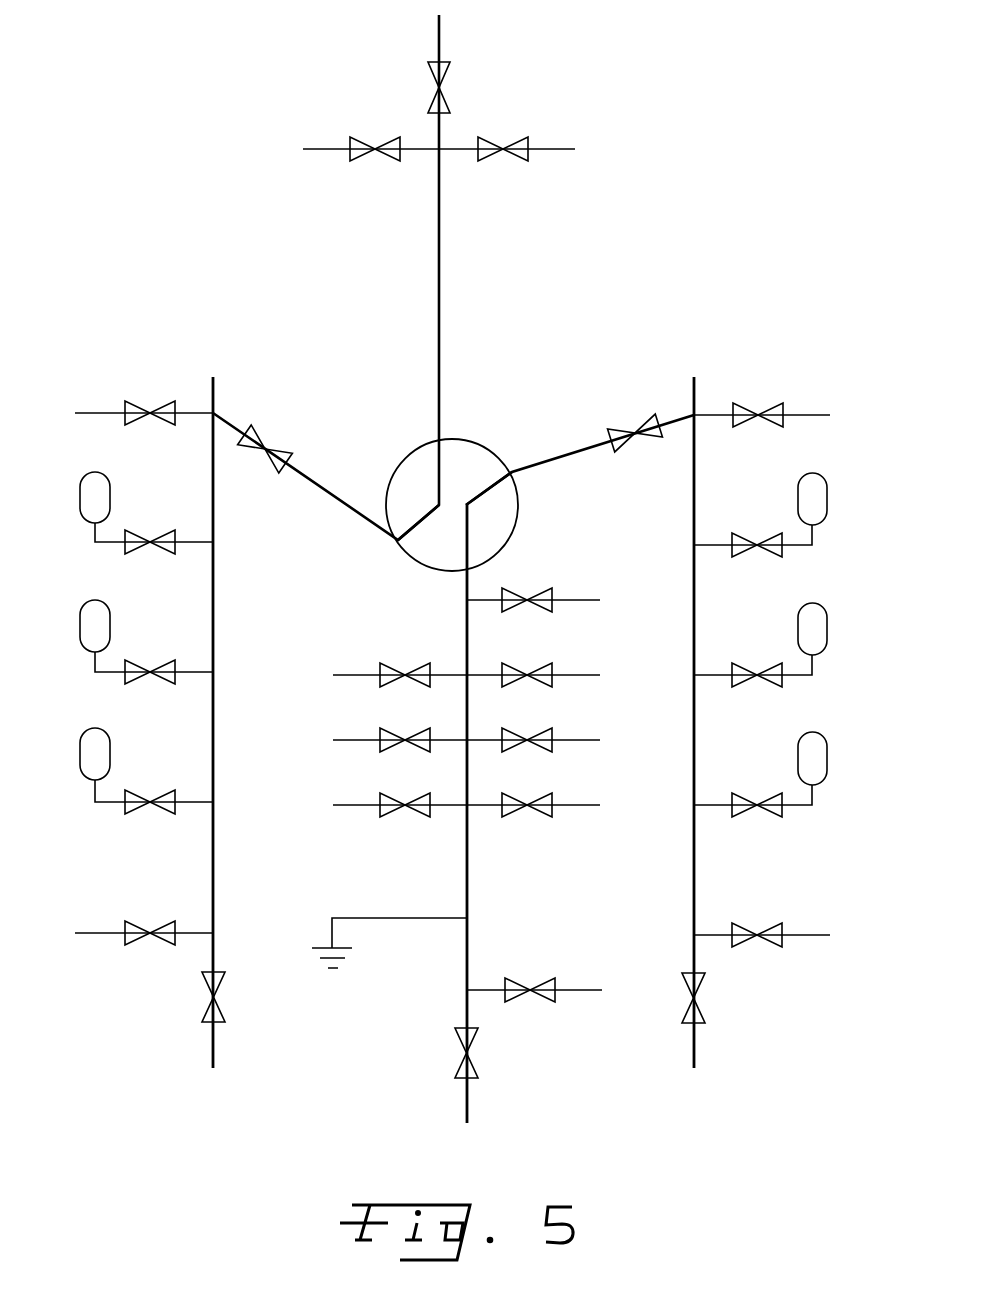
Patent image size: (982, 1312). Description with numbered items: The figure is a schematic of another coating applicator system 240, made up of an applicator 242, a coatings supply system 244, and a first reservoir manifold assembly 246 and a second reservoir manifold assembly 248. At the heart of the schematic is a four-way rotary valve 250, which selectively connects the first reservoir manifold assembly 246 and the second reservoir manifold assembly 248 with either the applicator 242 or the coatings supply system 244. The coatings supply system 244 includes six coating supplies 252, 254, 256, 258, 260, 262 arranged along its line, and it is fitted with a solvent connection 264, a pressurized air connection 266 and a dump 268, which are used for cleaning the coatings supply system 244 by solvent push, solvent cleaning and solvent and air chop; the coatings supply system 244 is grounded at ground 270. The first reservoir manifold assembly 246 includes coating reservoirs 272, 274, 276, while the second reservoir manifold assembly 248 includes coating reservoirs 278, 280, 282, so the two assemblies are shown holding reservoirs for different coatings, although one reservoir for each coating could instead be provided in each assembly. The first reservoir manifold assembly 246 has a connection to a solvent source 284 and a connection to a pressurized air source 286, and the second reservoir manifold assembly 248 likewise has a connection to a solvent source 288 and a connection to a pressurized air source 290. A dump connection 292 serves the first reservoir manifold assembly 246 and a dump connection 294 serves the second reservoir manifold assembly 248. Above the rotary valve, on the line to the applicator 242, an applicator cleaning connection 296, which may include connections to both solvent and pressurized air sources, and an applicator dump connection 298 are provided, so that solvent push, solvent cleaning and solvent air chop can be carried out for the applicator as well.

The applicator system 240 is at (223, 203).
The applicator 242 is at (433, 77).
The coatings supply system 244 is at (382, 1033).
The first reservoir manifold assembly 246 is at (162, 378).
The second reservoir manifold assembly 248 is at (763, 370).
The four-way rotary valve 250 is at (512, 508).
The coating supply 252 is at (385, 670).
The coating supply 254 is at (385, 732).
The coating supply 256 is at (385, 797).
The coating supply 258 is at (542, 668).
The coating supply 260 is at (545, 735).
The coating supply 262 is at (557, 798).
The solvent connection 264 is at (545, 987).
The pressurized air connection 266 is at (478, 1068).
The dump 268 is at (545, 595).
The ground 270 is at (387, 917).
The coating reservoir 272 is at (97, 502).
The coating reservoir 274 is at (100, 629).
The coating reservoir 276 is at (100, 757).
The coating reservoir 278 is at (805, 495).
The coating reservoir 280 is at (805, 625).
The coating reservoir 282 is at (802, 752).
The solvent source connection 284 is at (157, 938).
The pressurized air source connection 286 is at (205, 1015).
The solvent source connection 288 is at (775, 930).
The pressurized air source connection 290 is at (695, 1015).
The dump connection 292 is at (140, 403).
The dump connection 294 is at (775, 410).
The applicator cleaning connection 296 is at (387, 157).
The applicator dump connection 298 is at (520, 147).